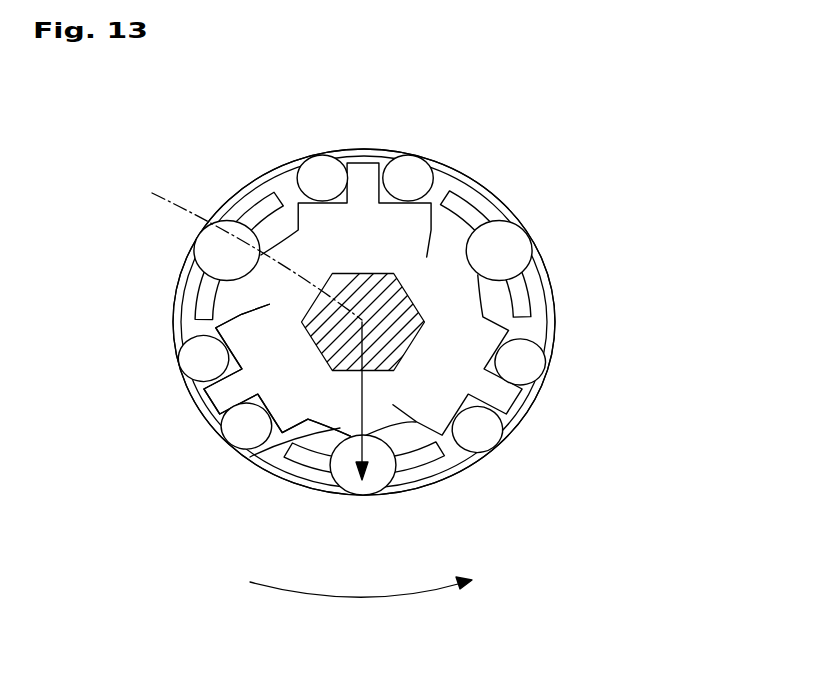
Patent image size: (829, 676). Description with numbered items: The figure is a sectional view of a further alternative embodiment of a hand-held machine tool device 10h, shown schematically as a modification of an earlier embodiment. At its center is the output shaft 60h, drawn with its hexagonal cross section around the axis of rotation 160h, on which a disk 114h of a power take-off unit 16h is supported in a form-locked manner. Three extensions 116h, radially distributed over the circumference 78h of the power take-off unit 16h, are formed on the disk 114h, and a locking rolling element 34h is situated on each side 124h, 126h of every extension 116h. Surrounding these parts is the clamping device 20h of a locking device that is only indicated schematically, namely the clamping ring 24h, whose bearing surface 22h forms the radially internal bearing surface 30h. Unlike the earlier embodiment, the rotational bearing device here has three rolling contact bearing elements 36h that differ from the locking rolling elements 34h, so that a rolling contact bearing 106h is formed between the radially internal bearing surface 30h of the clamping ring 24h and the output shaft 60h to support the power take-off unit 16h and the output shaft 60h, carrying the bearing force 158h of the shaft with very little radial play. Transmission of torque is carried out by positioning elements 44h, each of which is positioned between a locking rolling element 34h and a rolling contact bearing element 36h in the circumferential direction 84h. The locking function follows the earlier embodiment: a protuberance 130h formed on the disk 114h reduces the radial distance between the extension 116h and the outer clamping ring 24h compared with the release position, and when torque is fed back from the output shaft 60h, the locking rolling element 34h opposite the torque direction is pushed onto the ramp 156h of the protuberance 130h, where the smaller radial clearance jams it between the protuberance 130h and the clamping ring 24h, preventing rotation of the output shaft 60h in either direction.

The hand-held machine tool device 10h is at (614, 142).
The clamping device 20h is at (528, 425).
The clamping ring 24h is at (421, 322).
The rolling contact bearing 106h is at (319, 310).
The disk 114h is at (422, 235).
The bearing surface 22h is at (271, 468).
The circumference 78h is at (242, 303).
The radially internal bearing surface 30h is at (365, 268).
The extension 116h is at (362, 172).
The power take-off unit 16h is at (514, 322).
The bearing force 158h is at (372, 402).
The ramp 156h is at (240, 322).
The side 124h is at (337, 148).
The side 126h is at (397, 148).
The locking rolling element 34h is at (525, 355).
The protuberance 130h is at (490, 452).
The positioning element 44h is at (520, 300).
The rolling contact bearing element 36h is at (373, 468).
The output shaft 60h is at (415, 320).
The axis of rotation 160h is at (231, 247).
The circumferential direction 84h is at (352, 586).